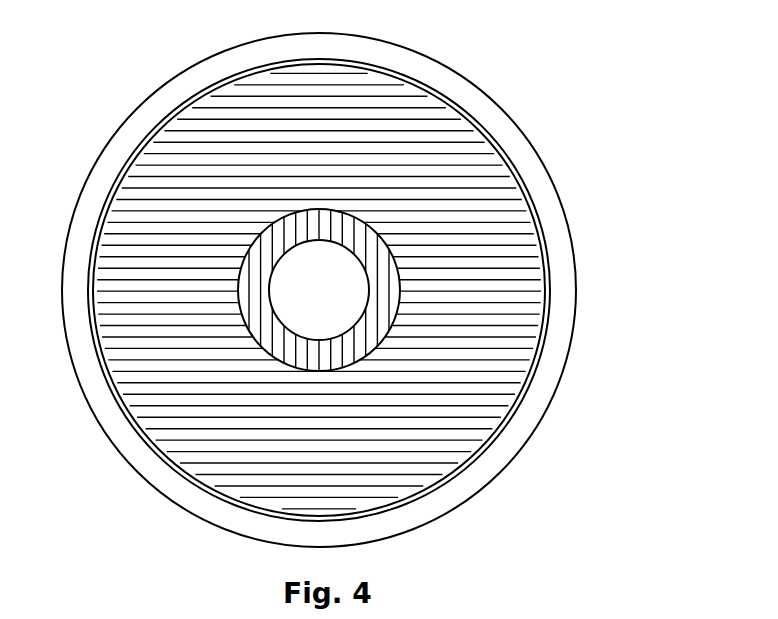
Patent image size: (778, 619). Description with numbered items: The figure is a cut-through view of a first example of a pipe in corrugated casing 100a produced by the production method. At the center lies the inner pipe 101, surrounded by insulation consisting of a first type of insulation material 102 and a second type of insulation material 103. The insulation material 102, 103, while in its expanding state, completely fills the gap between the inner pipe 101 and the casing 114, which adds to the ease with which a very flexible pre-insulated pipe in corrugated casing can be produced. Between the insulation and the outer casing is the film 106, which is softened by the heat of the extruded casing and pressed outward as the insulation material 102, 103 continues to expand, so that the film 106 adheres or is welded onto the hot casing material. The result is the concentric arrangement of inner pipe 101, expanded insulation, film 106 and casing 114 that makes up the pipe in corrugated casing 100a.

The pipe in corrugated casing 100a is at (112, 80).
The casing 114 is at (553, 230).
The film 106 is at (550, 281).
The first type of insulation material 102 is at (424, 291).
The second type of insulation material 103 is at (472, 290).
The inner pipe 101 is at (382, 307).